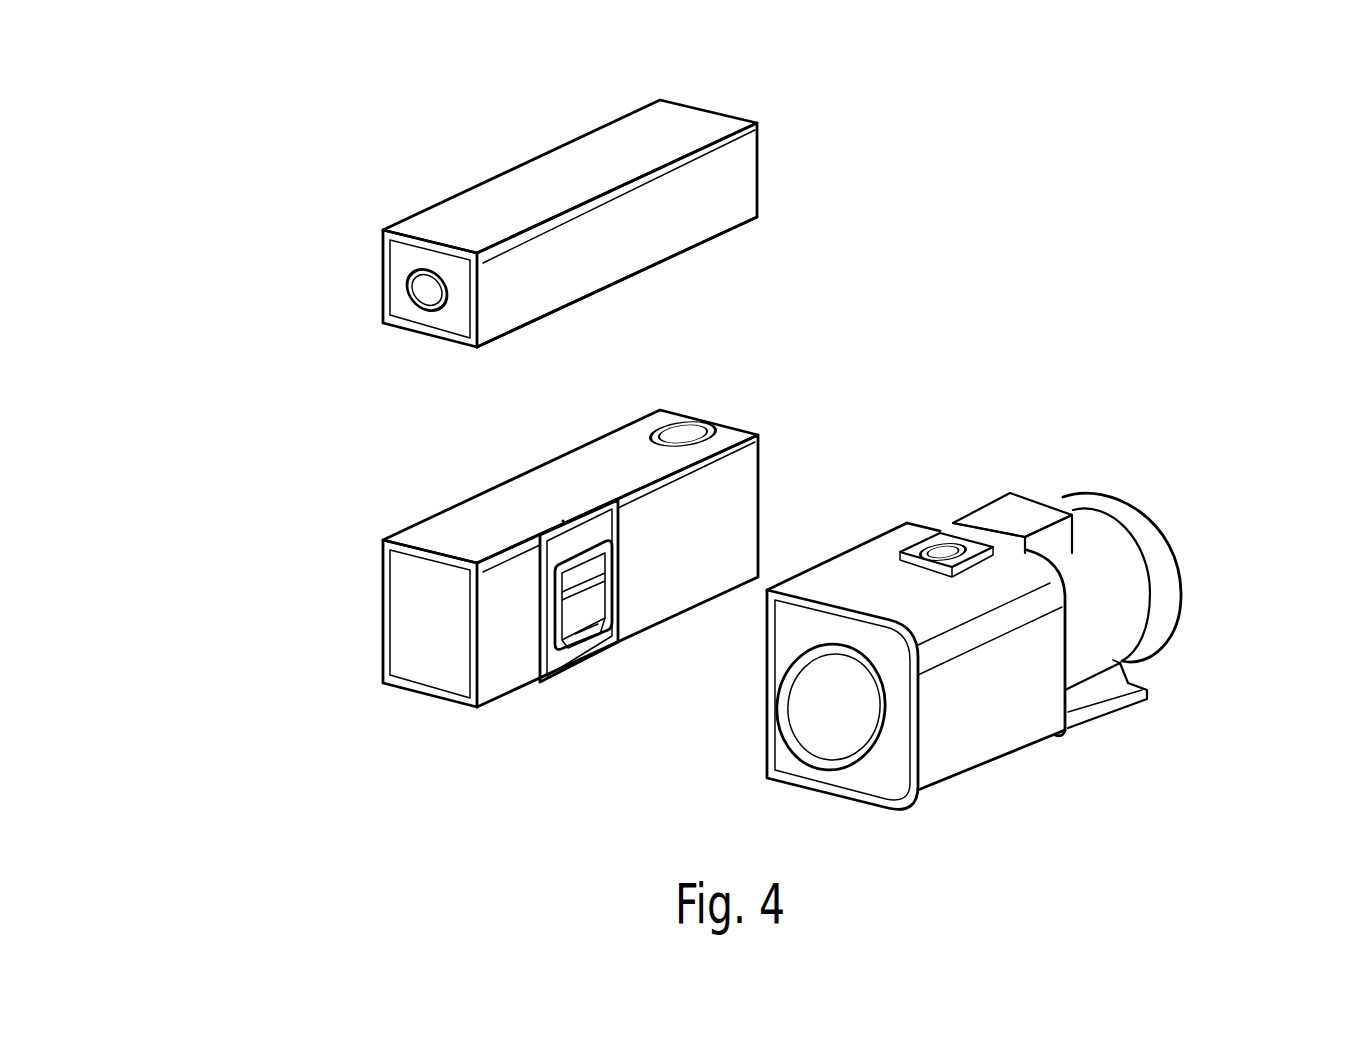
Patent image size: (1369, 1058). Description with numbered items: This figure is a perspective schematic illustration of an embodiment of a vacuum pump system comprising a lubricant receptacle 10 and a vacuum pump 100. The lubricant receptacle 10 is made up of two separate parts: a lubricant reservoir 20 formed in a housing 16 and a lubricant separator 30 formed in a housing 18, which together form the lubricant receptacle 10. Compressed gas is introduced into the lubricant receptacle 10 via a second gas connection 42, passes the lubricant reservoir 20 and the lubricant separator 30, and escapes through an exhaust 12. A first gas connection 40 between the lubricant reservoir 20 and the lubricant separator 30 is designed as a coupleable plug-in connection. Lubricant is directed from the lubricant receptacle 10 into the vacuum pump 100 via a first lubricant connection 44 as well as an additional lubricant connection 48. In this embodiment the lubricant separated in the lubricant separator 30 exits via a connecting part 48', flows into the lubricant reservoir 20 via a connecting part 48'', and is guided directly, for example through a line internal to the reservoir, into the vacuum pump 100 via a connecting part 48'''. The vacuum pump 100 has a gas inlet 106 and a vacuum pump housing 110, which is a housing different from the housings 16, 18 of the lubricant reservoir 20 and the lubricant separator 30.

The lubricant receptacle 10 is at (215, 250).
The exhaust 12 is at (425, 296).
The housing 16 is at (647, 600).
The housing 18 is at (622, 137).
The lubricant reservoir 20 is at (800, 485).
The lubricant separator 30 is at (803, 157).
The first gas connection 40 is at (720, 422).
The second gas connection 42 is at (590, 600).
The first lubricant connection 44 is at (567, 655).
The additional lubricant connection 48 is at (585, 470).
The connecting part 48' is at (617, 282).
The connecting part 48'' is at (499, 456).
The connecting part 48''' is at (465, 583).
The vacuum pump 100 is at (1198, 553).
The gas inlet 106 is at (943, 522).
The vacuum pump housing 110 is at (960, 730).